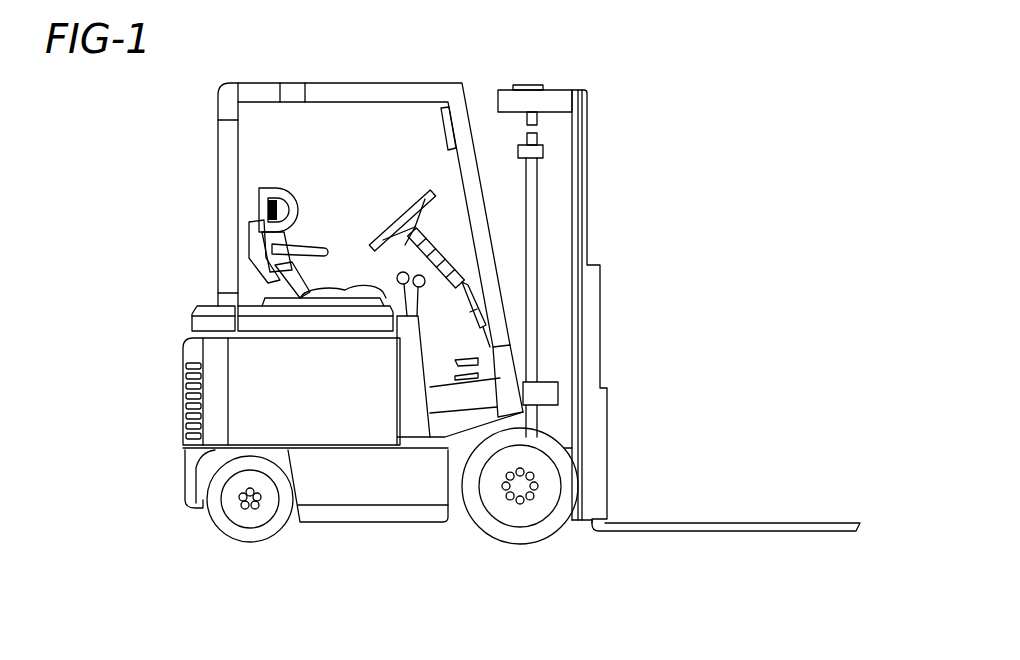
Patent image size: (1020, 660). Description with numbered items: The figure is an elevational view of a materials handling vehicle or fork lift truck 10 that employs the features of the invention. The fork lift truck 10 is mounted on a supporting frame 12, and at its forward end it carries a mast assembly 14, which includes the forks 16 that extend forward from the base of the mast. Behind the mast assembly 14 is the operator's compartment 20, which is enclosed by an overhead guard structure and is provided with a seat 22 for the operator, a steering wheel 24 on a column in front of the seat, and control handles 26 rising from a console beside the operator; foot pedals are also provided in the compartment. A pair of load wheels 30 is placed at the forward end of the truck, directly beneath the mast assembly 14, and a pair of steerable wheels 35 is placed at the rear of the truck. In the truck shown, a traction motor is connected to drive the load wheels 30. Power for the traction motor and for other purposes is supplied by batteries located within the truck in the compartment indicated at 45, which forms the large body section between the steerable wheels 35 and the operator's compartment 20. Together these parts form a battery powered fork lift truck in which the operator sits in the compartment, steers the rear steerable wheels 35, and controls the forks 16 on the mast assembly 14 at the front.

The fork lift truck 10 is at (197, 252).
The supporting frame 12 is at (202, 483).
The mast assembly 14 is at (602, 205).
The forks 16 is at (690, 528).
The operator's compartment 20 is at (332, 141).
The seat 22 is at (291, 233).
The steering wheel 24 is at (418, 212).
The control handles 26 is at (397, 283).
The load wheels 30 is at (518, 515).
The steerable wheels 35 is at (267, 520).
The batteries 45 is at (258, 382).